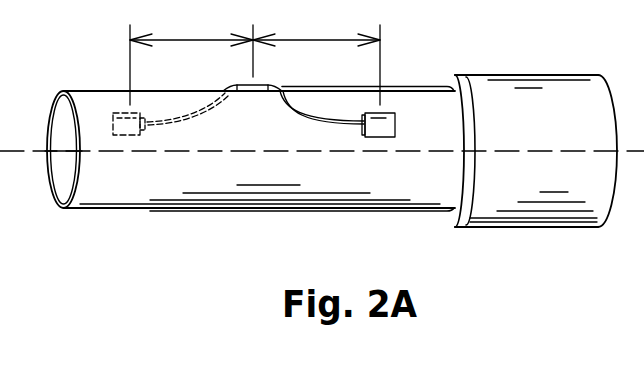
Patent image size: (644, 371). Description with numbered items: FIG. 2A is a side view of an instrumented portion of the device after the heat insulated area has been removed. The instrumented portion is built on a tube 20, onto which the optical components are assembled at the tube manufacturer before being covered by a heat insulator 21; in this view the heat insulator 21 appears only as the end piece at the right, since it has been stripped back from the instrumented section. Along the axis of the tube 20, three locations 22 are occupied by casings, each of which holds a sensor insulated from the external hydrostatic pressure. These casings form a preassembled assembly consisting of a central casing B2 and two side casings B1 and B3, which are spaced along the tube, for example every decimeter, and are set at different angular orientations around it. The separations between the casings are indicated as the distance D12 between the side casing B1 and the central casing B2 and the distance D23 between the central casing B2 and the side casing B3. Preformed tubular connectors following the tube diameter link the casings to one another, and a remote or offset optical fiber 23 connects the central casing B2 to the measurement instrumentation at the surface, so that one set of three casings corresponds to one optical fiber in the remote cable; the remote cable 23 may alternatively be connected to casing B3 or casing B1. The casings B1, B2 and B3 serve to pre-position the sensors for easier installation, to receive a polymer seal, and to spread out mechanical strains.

The tube 20 is at (97, 101).
The heat insulator 21 is at (497, 104).
The locations 22 is at (353, 137).
The remote optical fiber 23 is at (421, 86).
The side casing B1 is at (160, 131).
The central casing B2 is at (293, 105).
The side casing B3 is at (399, 129).
The distance between B1 and B2 D12 is at (191, 55).
The distance between B2 and B3 D23 is at (316, 55).